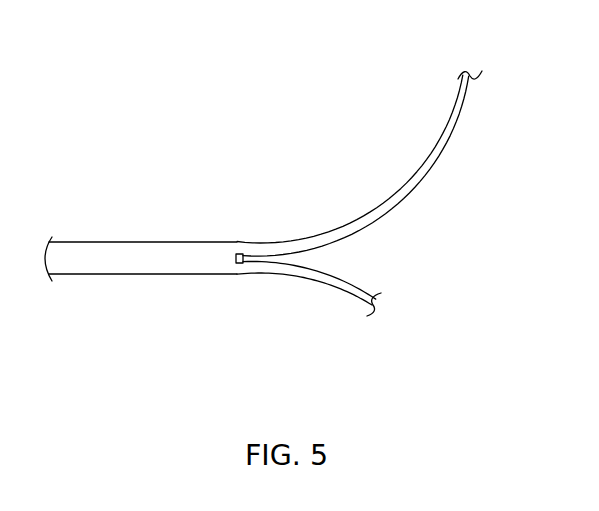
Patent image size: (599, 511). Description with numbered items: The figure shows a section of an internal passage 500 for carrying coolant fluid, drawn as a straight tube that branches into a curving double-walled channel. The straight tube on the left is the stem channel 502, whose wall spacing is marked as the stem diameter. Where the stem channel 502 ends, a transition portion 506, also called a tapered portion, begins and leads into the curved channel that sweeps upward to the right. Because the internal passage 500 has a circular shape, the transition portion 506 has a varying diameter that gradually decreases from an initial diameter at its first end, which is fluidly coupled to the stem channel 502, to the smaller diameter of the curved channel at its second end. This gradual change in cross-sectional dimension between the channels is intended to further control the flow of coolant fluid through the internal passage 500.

The internal passage 500 is at (233, 106).
The stem channel 502 is at (132, 275).
The transition portion 506 is at (432, 168).